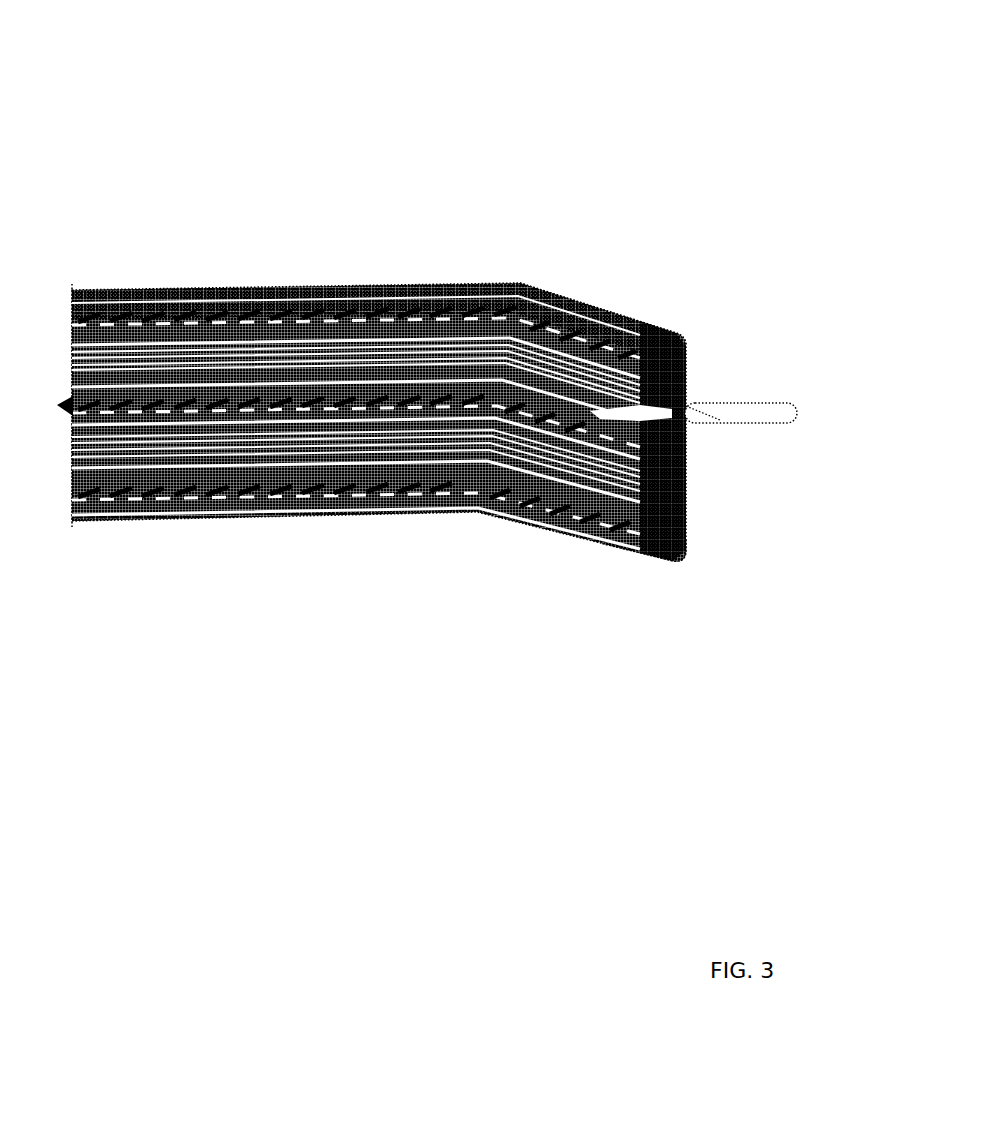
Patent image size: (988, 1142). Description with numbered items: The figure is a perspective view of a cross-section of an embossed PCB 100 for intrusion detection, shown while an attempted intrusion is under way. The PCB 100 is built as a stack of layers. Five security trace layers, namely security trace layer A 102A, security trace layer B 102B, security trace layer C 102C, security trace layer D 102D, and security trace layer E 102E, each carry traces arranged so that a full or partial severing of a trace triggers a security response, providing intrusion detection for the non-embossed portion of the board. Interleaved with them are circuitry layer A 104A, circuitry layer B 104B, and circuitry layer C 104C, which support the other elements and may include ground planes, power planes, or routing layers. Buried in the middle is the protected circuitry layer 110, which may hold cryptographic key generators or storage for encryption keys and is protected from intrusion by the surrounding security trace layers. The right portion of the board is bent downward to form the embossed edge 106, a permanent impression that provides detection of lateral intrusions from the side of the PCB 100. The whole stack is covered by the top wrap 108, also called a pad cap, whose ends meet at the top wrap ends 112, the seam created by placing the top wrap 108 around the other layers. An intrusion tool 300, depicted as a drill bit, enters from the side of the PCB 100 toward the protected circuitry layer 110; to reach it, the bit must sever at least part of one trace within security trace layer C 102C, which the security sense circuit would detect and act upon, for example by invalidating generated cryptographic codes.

The PCB 100 is at (379, 288).
The security trace layer A 102A is at (341, 282).
The security trace layer B 102B is at (356, 225).
The security trace layer C 102C is at (348, 507).
The security trace layer D 102D is at (356, 598).
The security trace layer E 102E is at (353, 562).
The circuitry layer A 104A is at (344, 247).
The circuitry layer B 104B is at (356, 299).
The circuitry layer C 104C is at (356, 554).
The embossed edge 106 is at (379, 226).
The top wrap 108 is at (371, 426).
The protected circuitry layer 110 is at (356, 602).
The top wrap ends 112 is at (664, 613).
The intrusion tool 300 is at (662, 241).